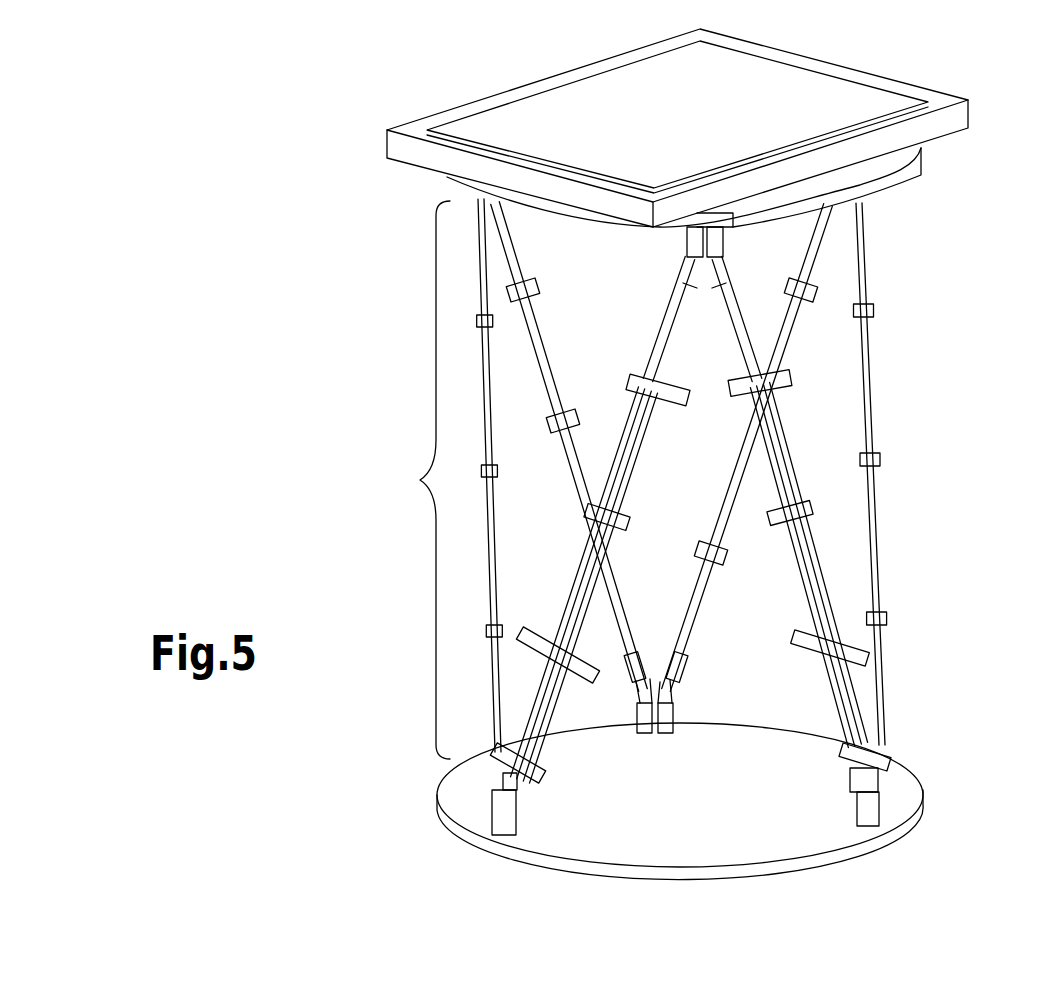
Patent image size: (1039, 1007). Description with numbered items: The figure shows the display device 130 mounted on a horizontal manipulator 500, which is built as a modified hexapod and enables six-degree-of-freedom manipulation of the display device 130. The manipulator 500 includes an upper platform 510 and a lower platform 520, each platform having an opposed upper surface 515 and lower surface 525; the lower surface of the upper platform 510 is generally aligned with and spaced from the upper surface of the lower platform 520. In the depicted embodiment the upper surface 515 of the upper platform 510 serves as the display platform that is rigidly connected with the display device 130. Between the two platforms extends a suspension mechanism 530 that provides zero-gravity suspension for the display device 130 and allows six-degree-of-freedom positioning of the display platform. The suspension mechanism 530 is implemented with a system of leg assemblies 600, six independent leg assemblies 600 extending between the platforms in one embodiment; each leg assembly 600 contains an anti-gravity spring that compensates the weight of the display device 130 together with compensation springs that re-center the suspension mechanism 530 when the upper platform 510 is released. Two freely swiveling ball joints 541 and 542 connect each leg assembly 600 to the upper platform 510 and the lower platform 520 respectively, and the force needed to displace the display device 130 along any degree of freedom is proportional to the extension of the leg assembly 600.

The display device 130 is at (413, 127).
The horizontal manipulator 500 is at (243, 763).
The upper platform 510 is at (878, 193).
The upper surface 515 is at (852, 180).
The lower platform 520 is at (817, 860).
The lower surface 525 is at (743, 760).
The suspension mechanism 530 is at (433, 431).
The ball joint 541 is at (687, 237).
The ball joint 542 is at (520, 800).
The leg assembly 600 is at (743, 400).